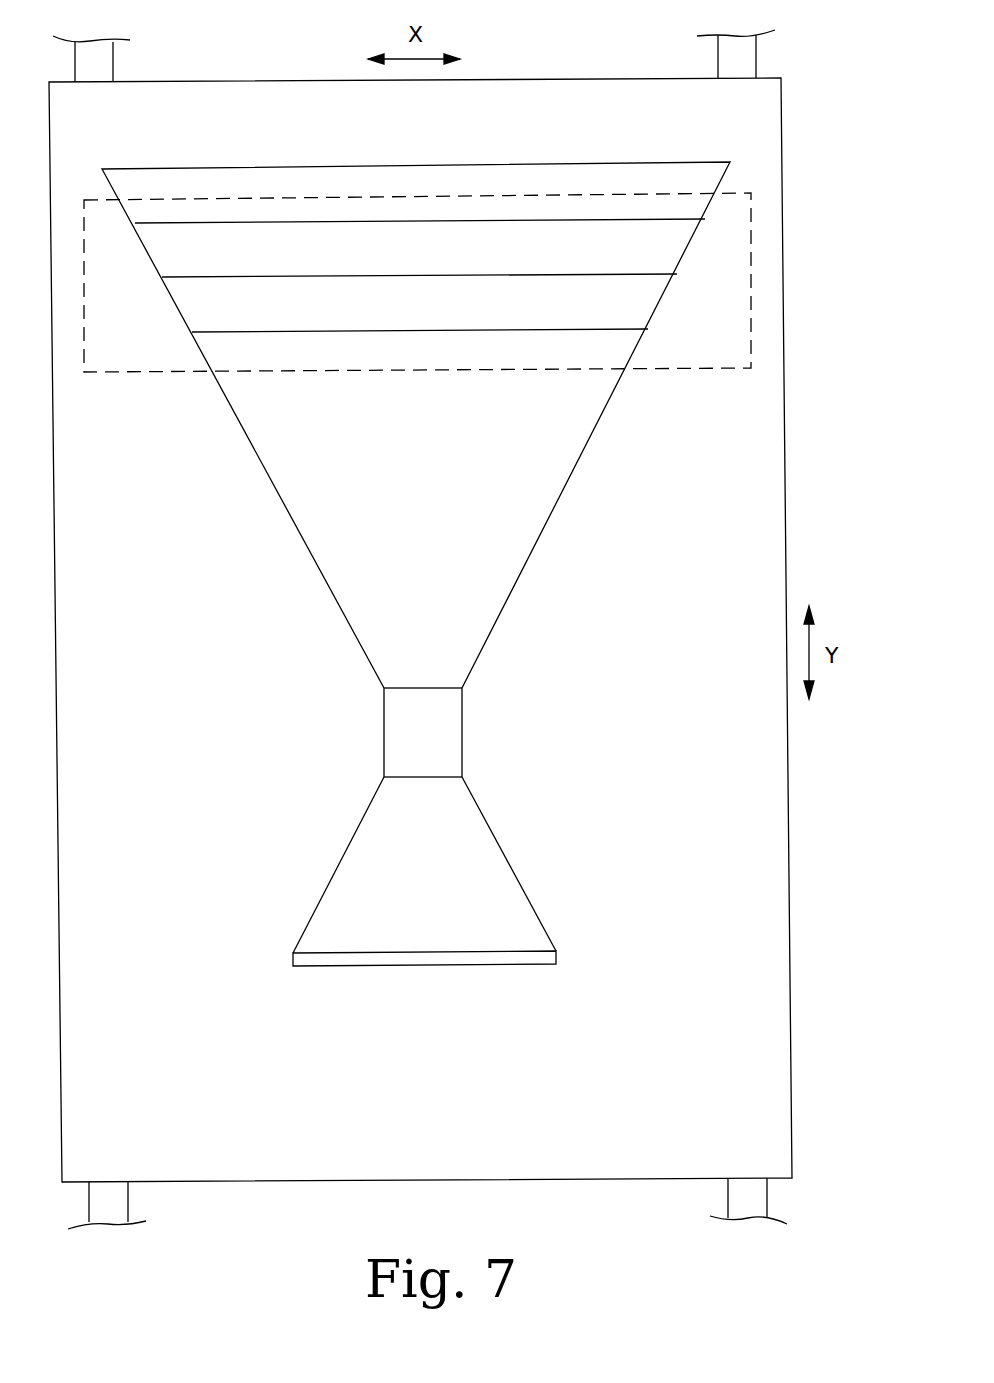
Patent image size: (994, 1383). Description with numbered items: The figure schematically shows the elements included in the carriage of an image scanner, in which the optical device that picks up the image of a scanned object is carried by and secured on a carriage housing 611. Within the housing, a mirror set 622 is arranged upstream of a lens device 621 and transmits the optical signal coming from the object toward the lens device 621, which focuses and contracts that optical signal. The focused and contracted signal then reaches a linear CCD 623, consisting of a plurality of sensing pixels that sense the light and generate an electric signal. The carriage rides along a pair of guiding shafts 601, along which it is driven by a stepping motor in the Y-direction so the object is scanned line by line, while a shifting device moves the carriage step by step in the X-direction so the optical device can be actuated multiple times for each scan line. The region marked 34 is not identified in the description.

The scanning beam region 34 is at (498, 165).
The guiding shafts 601 is at (748, 1198).
The carriage housing 611 is at (765, 826).
The lens device 621 is at (420, 710).
The mirror set 622 is at (751, 258).
The linear CCD 623 is at (483, 958).